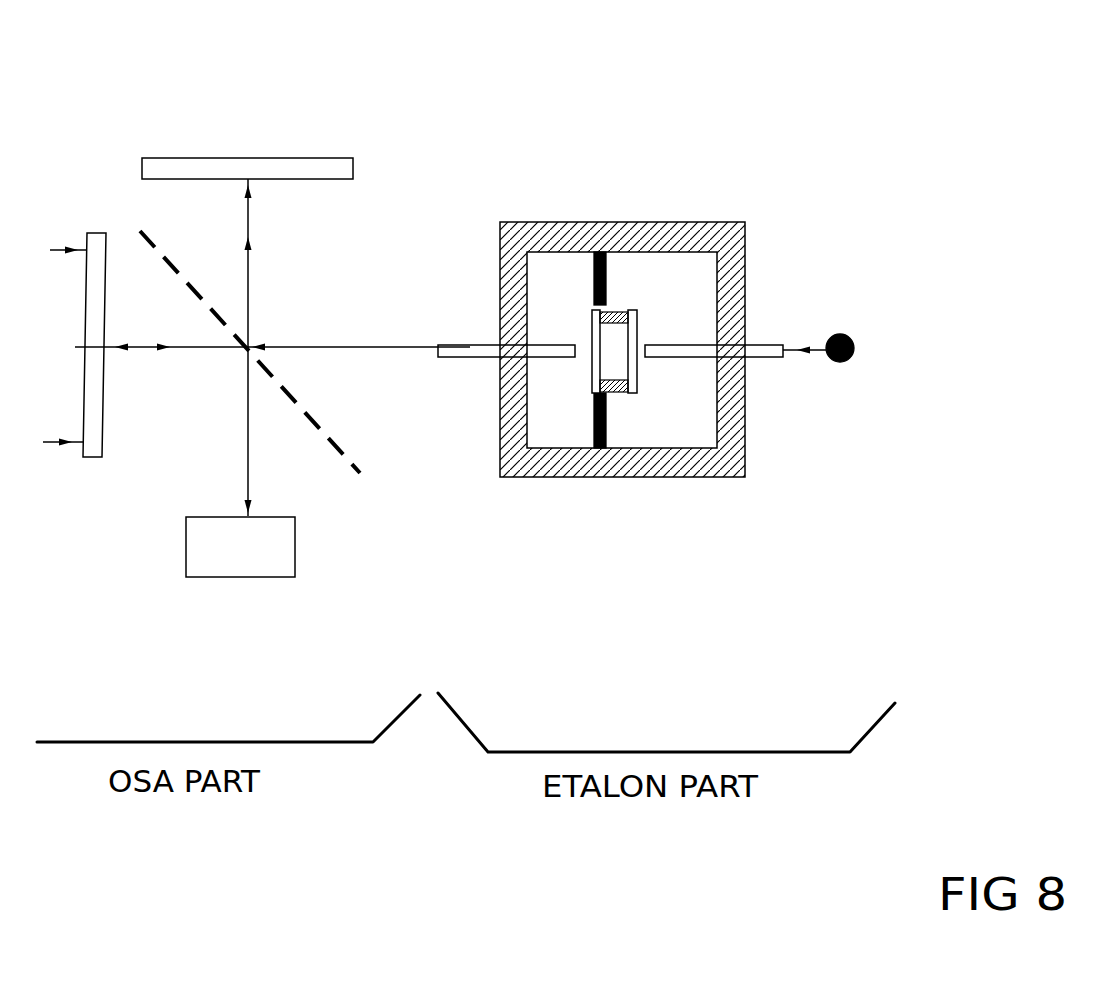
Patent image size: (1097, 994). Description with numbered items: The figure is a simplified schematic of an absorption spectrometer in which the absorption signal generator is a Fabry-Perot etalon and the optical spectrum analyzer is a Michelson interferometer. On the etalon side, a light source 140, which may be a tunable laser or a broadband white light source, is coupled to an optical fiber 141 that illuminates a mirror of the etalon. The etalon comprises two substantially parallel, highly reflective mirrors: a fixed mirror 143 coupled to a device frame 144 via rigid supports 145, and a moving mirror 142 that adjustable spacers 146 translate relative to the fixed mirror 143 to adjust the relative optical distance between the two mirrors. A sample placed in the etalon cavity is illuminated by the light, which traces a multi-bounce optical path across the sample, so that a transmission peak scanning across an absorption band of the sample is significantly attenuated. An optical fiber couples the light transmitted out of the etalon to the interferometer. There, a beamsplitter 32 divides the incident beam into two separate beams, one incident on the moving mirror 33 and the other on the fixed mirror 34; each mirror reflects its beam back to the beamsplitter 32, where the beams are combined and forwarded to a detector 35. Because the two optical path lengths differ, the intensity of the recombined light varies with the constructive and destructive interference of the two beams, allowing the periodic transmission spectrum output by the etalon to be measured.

The beamsplitter 32 is at (382, 398).
The moving mirror 33 is at (291, 466).
The fixed mirror 34 is at (352, 112).
The detector 35 is at (397, 574).
The light source 140 is at (951, 382).
The optical fiber 141 is at (736, 295).
The moving mirror 142 is at (819, 266).
The fixed mirror 143 is at (756, 227).
The device frame 144 is at (685, 250).
The rigid supports 145 is at (777, 452).
The adjustable spacers 146 is at (840, 432).